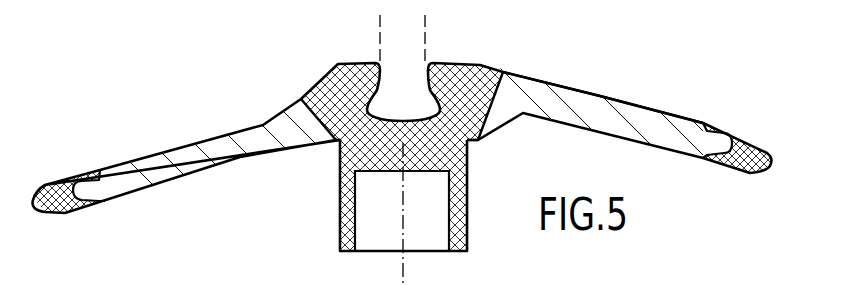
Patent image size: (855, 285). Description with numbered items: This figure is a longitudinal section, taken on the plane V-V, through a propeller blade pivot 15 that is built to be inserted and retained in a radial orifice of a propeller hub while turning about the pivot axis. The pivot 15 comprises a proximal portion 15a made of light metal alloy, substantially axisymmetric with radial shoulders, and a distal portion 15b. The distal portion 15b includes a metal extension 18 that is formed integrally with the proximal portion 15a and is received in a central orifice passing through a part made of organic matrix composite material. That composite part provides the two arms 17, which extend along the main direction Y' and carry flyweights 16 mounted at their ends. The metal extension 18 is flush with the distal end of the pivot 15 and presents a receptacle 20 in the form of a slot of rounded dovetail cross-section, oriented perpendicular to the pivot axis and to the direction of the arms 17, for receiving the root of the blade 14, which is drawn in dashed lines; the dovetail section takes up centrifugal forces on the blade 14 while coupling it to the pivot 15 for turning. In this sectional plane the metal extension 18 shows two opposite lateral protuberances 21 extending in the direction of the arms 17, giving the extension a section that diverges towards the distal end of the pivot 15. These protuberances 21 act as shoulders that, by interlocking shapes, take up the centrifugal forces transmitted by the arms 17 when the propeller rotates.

The blade 14 is at (380, 43).
The propeller blade pivot 15 is at (575, 67).
The proximal portion 15a is at (470, 222).
The distal portion 15b is at (513, 70).
The flyweights 16 is at (58, 177).
The arms 17 is at (175, 149).
The metal extension 18 is at (470, 144).
The receptacle 20 is at (336, 143).
The lateral protuberances 21 is at (332, 97).